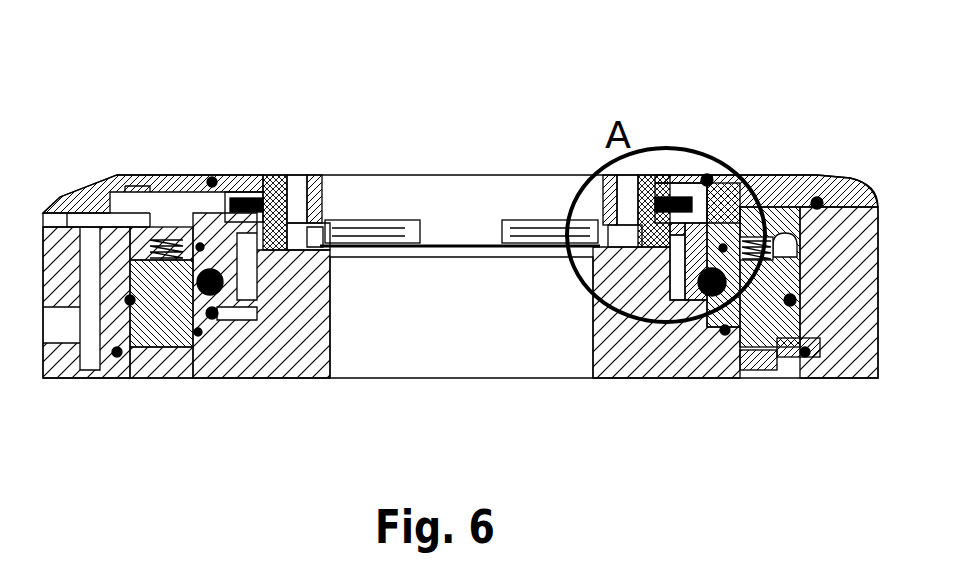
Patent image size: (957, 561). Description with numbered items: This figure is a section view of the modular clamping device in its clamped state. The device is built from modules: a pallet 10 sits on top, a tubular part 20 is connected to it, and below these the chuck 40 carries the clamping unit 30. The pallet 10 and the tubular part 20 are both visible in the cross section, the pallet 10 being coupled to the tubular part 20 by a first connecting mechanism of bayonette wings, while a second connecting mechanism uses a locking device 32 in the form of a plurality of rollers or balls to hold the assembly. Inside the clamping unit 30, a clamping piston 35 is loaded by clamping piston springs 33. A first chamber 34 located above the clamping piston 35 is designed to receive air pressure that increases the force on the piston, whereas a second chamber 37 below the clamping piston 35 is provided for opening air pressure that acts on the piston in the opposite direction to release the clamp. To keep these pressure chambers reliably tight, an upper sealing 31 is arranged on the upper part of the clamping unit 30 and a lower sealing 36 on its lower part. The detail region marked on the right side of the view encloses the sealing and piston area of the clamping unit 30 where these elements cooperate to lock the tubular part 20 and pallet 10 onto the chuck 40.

The pallet 10 is at (281, 173).
The tubular part 20 is at (225, 173).
The clamping unit 30 is at (838, 335).
The upper sealing 31 is at (704, 170).
The locking device (roller or ball) 32 is at (704, 309).
The clamping piston springs 33 is at (753, 236).
The first chamber 34 is at (770, 236).
The clamping piston 35 is at (766, 327).
The lower sealing 36 is at (709, 325).
The second chamber 37 is at (754, 347).
The chuck 40 is at (278, 350).